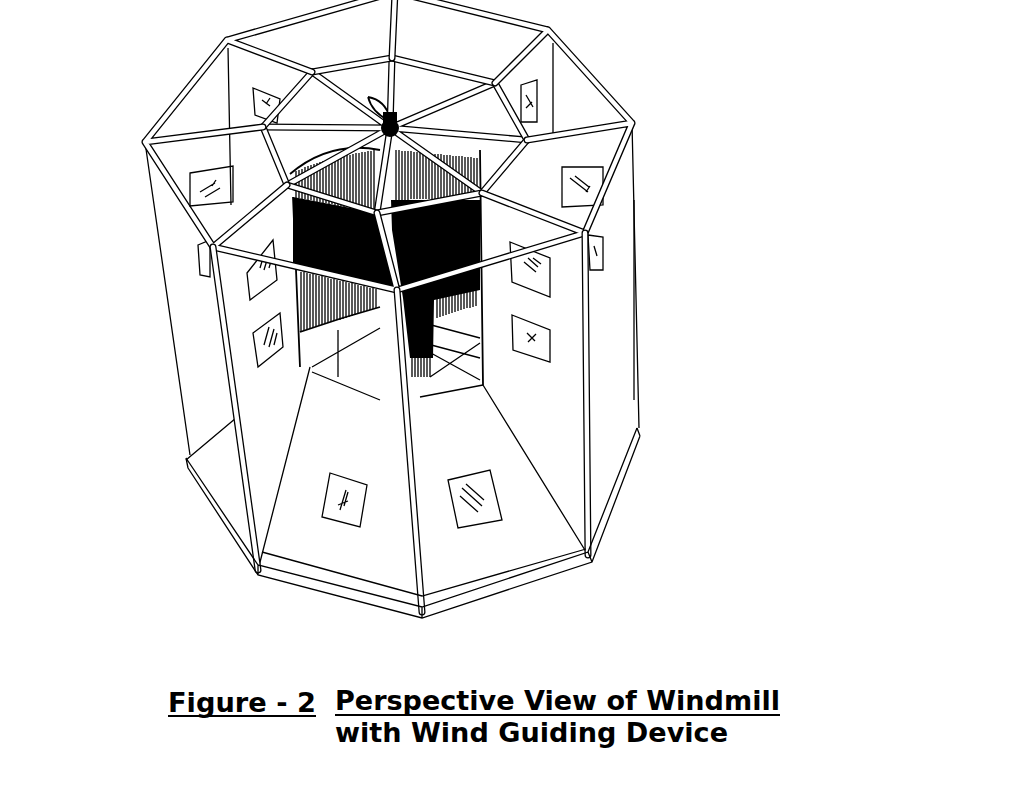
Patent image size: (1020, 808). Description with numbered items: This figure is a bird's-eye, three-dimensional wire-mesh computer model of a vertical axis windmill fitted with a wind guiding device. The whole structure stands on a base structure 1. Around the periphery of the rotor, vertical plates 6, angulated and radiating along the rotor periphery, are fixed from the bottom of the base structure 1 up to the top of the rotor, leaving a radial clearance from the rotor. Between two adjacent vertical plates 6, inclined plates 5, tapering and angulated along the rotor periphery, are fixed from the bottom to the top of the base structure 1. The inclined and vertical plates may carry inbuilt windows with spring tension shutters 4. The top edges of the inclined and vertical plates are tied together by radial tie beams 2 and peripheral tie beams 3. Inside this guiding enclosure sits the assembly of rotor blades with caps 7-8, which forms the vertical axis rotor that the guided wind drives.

The base structure 1 is at (298, 581).
The radial tie beams 2 is at (458, 114).
The peripheral tie beams 3 is at (474, 318).
The windows with spring tension shutters 4 is at (208, 210).
The inclined plates 5 is at (328, 458).
The vertical plates 6 is at (615, 308).
The assembly of rotor blades with caps 7-8 is at (528, 166).